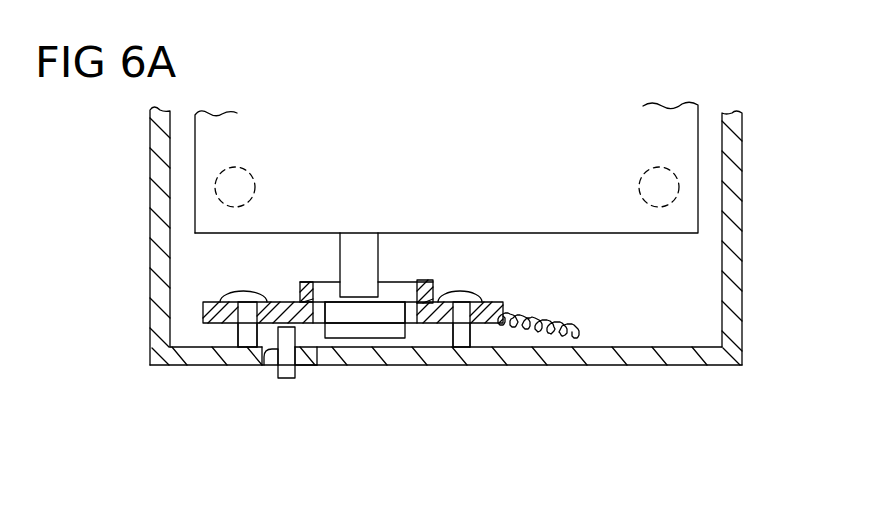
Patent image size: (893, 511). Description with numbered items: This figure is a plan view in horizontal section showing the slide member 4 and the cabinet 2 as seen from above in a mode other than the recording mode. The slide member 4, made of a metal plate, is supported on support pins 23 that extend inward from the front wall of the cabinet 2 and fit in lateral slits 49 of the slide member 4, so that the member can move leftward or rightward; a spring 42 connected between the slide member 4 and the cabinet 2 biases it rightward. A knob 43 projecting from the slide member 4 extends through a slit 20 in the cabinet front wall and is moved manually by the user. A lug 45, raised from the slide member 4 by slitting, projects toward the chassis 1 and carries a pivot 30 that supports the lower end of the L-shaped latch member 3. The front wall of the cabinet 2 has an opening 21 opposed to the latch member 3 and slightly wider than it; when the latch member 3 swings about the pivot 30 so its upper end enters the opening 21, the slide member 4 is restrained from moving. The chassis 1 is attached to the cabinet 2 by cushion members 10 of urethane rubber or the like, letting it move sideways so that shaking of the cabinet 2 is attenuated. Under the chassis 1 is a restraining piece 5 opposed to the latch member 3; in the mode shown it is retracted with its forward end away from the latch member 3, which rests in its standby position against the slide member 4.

The chassis 1 is at (678, 138).
The cabinet 2 is at (741, 263).
The latch member 3 is at (375, 333).
The slide member 4 is at (488, 320).
The restraining piece 5 is at (373, 263).
The cushion member 10 is at (250, 174).
The slit 20 is at (272, 367).
The opening 21 is at (413, 350).
The support pin 23 is at (242, 329).
The pivot 30 is at (440, 299).
The spring 42 is at (583, 346).
The knob 43 is at (291, 378).
The lug 45 is at (421, 282).
The lateral slit 49 is at (235, 297).